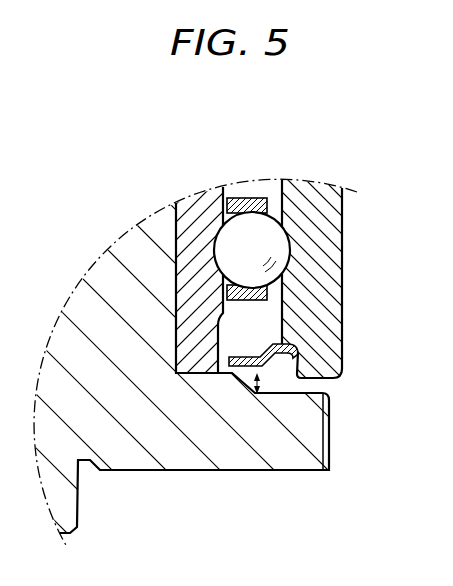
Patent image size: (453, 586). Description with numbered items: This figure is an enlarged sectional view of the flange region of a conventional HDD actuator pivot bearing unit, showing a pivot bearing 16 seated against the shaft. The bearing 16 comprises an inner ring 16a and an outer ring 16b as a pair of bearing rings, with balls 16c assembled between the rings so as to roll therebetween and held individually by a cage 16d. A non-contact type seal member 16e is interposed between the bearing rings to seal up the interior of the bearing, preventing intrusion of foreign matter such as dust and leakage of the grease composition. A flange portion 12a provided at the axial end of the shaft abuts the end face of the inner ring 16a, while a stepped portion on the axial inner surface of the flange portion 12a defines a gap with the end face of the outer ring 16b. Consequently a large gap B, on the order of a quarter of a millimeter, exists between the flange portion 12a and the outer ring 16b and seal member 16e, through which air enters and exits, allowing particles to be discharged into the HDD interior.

The flange portion 12a is at (132, 452).
The pivot bearing 16 is at (259, 277).
The inner ring 16a is at (183, 250).
The outer ring 16b is at (325, 288).
The balls 16c is at (270, 238).
The cage 16d is at (252, 207).
The seal member 16e is at (287, 343).
The gap B is at (262, 380).